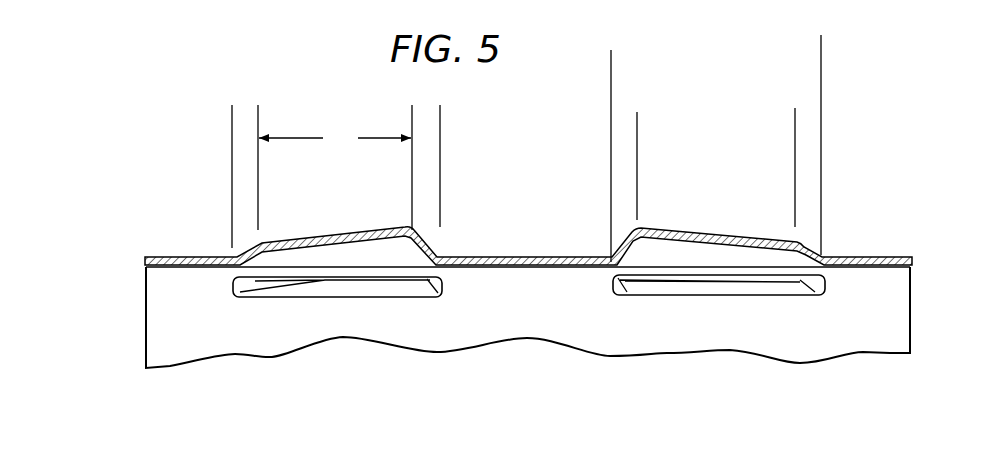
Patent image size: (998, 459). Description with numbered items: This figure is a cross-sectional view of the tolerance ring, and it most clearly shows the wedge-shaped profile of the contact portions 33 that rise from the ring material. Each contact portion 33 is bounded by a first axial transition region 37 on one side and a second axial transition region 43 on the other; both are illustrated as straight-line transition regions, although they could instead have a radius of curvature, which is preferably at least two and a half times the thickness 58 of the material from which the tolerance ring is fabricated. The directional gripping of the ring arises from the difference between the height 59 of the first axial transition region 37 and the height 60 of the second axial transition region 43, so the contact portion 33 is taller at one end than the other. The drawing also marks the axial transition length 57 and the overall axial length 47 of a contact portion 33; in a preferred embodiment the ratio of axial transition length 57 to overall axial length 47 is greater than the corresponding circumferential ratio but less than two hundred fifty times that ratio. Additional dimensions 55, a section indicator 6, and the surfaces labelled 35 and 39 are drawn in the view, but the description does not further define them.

The section line 6- 6 is at (363, 195).
The contact portion 33 is at (382, 220).
The plate 35 is at (530, 257).
The first axial transition region 37 is at (250, 247).
The upper surface of rib 39 is at (313, 233).
The second axial transition region 43 is at (432, 240).
The overall axial length 47 is at (820, 71).
The edge dimension 55 is at (231, 138).
The axial transition length 57 is at (610, 157).
The thickness 58 is at (112, 335).
The height of the first axial transition region 59 is at (944, 330).
The height of the second axial transition region 60 is at (490, 300).